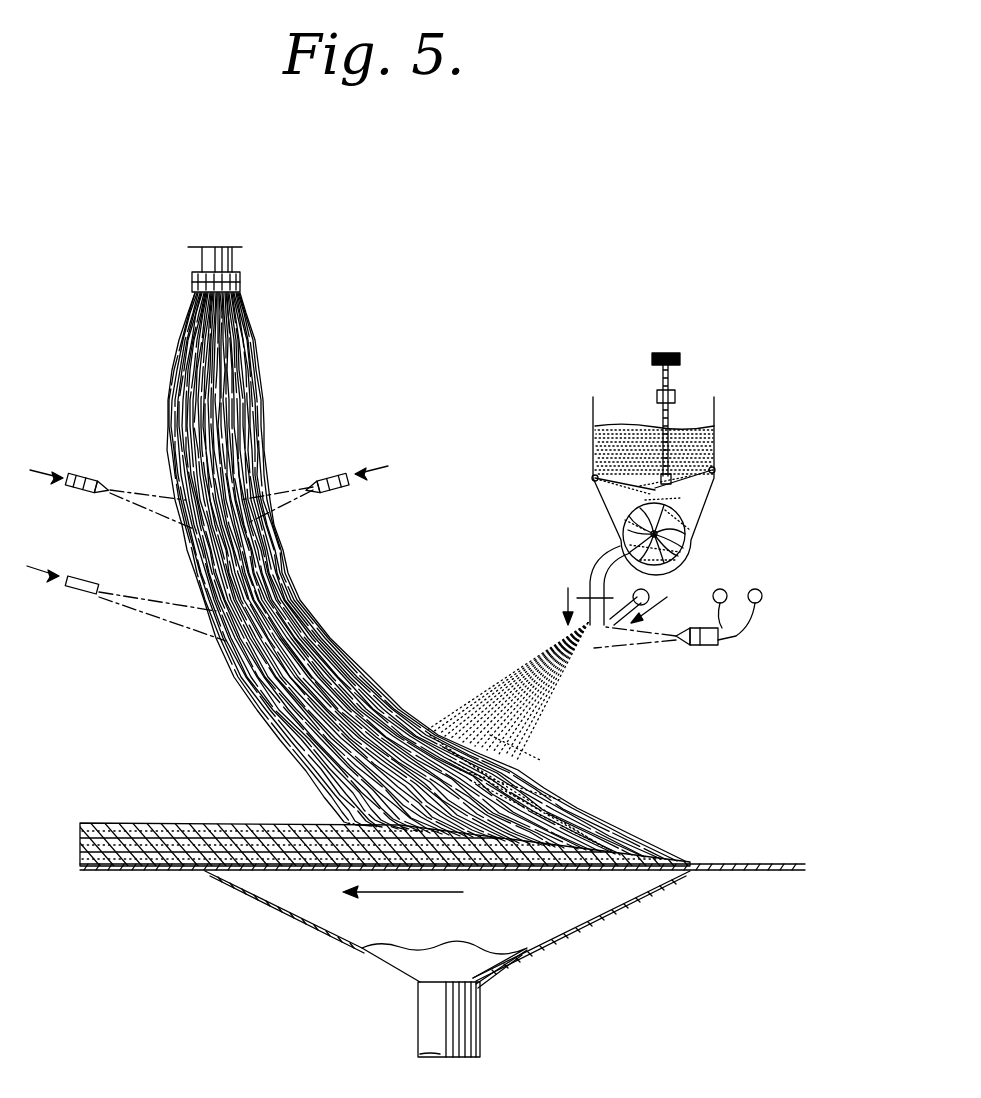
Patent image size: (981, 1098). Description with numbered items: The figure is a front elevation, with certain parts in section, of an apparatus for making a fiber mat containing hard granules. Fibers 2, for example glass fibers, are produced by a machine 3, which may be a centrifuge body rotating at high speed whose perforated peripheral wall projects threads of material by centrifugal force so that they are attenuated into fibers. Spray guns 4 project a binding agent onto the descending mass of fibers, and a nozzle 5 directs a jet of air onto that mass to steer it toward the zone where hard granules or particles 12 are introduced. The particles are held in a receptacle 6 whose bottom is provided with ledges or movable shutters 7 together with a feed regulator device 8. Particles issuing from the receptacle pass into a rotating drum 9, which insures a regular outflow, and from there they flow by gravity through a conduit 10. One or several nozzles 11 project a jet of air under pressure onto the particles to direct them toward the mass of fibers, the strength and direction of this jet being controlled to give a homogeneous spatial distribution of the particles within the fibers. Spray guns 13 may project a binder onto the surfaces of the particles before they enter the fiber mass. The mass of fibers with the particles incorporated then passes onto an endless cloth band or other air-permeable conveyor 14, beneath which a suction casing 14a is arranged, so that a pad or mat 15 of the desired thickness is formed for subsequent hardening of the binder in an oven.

The fibers 2 is at (258, 398).
The machine 3 is at (241, 283).
The spray guns 4 is at (333, 476).
The nozzle 5 is at (82, 592).
The receptacle 6 is at (593, 410).
The ledges or movable shutters 7 is at (692, 485).
The feed regulator device 8 is at (661, 373).
The rotating drum 9 is at (628, 527).
The conduit 10 is at (602, 561).
The nozzles 11 is at (649, 597).
The hard granules or particles 12 is at (505, 700).
The spray guns 13 is at (705, 646).
The air-permeable conveyor 14 is at (527, 873).
The suction casing 14a is at (580, 935).
The pad or mat 15 is at (157, 840).